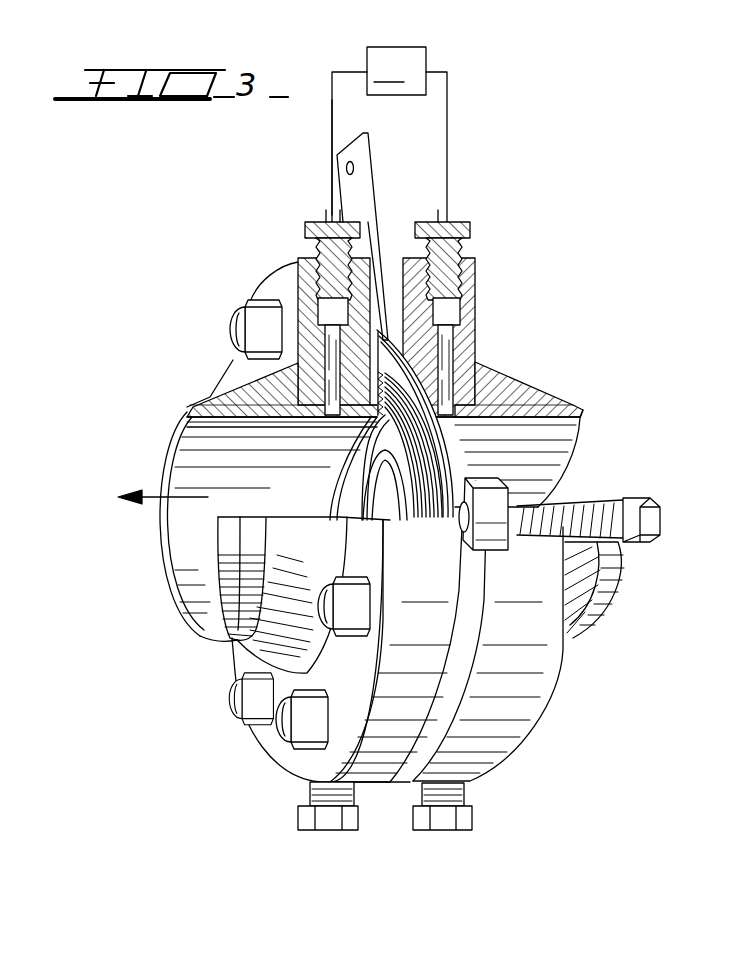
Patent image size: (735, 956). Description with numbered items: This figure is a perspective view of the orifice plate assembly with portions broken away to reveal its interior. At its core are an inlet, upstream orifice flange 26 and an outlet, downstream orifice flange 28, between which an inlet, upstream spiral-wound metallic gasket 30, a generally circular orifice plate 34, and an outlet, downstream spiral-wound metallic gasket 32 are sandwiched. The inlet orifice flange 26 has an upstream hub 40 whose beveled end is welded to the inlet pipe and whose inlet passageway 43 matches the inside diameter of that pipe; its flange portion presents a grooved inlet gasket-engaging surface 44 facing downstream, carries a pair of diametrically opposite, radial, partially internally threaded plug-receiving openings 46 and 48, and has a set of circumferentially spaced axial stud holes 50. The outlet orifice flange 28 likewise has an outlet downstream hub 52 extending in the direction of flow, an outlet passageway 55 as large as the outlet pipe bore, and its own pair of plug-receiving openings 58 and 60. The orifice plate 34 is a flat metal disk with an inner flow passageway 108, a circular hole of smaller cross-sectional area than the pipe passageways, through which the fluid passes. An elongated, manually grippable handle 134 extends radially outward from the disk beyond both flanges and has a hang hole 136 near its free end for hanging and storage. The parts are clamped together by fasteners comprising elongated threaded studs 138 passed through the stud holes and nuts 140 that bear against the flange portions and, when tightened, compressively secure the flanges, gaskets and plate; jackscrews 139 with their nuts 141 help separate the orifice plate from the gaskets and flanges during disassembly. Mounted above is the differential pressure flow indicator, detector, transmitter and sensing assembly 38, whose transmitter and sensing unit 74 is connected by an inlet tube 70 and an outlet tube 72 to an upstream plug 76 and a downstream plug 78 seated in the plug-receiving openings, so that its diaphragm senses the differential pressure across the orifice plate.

The inlet upstream orifice flange 26 is at (568, 432).
The outlet downstream orifice flange 28 is at (165, 450).
The inlet upstream spiral wound metallic gasket 30 is at (440, 398).
The outlet downstream spiral-wound metallic gasket 32 is at (448, 457).
The orifice plate 34 is at (452, 428).
The differential pressure flow indicator, detector, transmitter, and sensing assembl 38 is at (431, 61).
The upstream hub 40 is at (600, 618).
The inlet passageway 43 is at (545, 458).
The inlet upstream gasket-engaging surface 44 is at (452, 224).
The inlet plug-receiving opening 46 is at (470, 312).
The inlet plug-receiving opening 48 is at (470, 788).
The inlet axial stud holes 50 is at (612, 548).
The outlet downstream hub 52 is at (193, 402).
The outlet passageway 55 is at (182, 540).
The outlet plug-receiving opening 58 is at (318, 308).
The outlet plug-receiving opening 60 is at (306, 796).
The inlet upstream tube 70 is at (447, 140).
The outlet downstream tube 72 is at (332, 106).
The transmitter and sensing unit 74 is at (428, 62).
The upstream plug 76 is at (476, 278).
The downstream plug 78 is at (318, 262).
The inner flow passageway 108 is at (370, 498).
The handle 134 is at (376, 193).
The hang hole 136 is at (354, 168).
The threaded studs 138 is at (224, 700).
The jackscrews 139 is at (560, 505).
The nuts 140 is at (276, 732).
The jackscrew nuts 141 is at (648, 498).